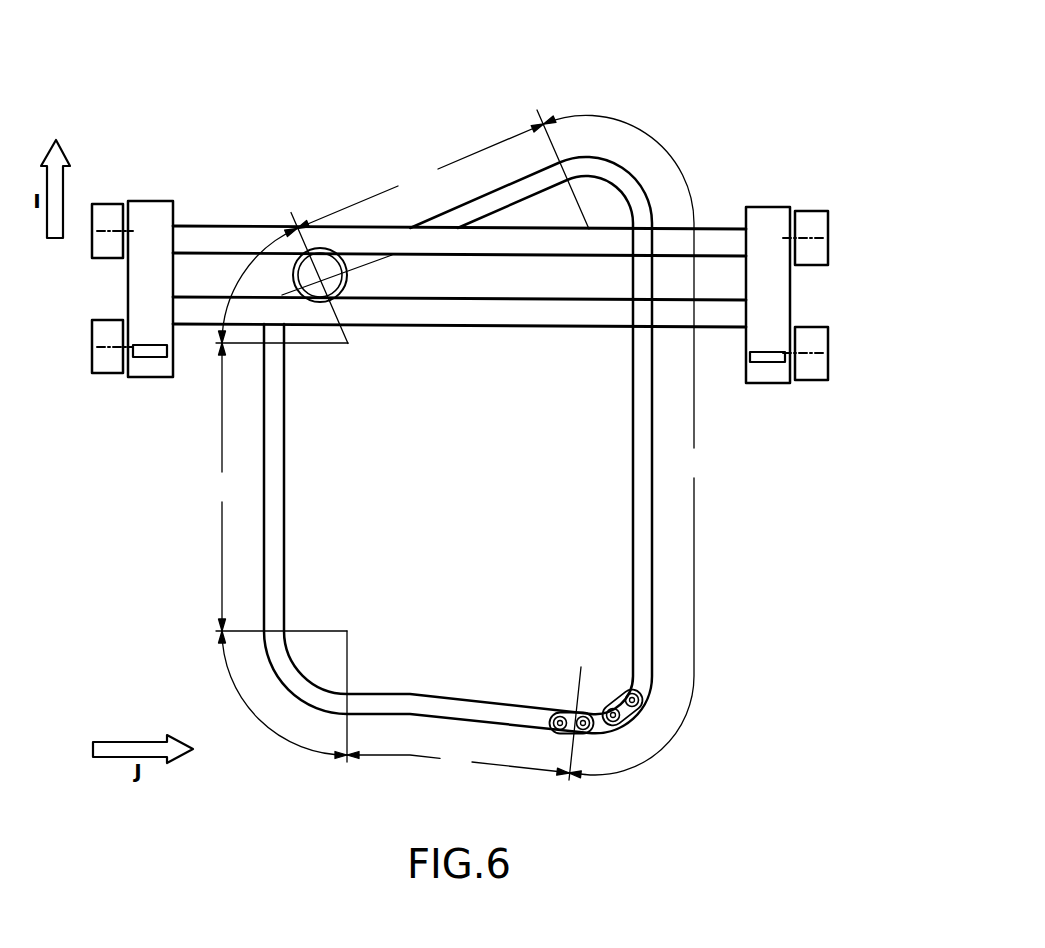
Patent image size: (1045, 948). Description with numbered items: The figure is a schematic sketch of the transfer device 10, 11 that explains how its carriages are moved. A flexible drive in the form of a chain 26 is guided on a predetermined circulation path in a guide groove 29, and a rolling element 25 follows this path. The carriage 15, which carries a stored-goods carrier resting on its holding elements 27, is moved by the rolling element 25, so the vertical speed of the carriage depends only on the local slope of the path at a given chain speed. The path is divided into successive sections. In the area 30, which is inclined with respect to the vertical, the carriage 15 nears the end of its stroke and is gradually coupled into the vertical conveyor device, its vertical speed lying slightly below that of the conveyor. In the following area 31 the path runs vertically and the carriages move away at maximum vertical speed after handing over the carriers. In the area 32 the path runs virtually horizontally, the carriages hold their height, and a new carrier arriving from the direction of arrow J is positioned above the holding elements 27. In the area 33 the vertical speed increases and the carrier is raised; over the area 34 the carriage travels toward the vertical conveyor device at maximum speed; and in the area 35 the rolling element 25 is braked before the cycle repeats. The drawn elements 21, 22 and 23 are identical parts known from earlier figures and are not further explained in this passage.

The motor vehicle door 10 is at (682, 42).
The door module 11 is at (651, 70).
The carriage 15 is at (152, 205).
The fastening element 21 is at (105, 362).
The lower cross member 22 is at (473, 318).
The upper cross member 23 is at (528, 243).
The rolling element 25 is at (327, 250).
The chain 26 is at (627, 710).
The holding elements 27 is at (155, 360).
The guide groove 29 is at (645, 537).
The area inclined with respect to the vertical 30 is at (420, 176).
The vertical area 31 is at (625, 446).
The virtually horizontal area 32 is at (466, 762).
The area following area 32 33 is at (283, 695).
The area of maximum vertical speed 34 is at (218, 481).
The braking area 35 is at (258, 292).